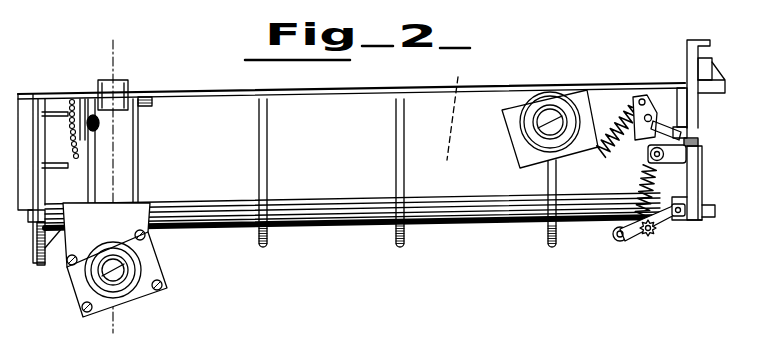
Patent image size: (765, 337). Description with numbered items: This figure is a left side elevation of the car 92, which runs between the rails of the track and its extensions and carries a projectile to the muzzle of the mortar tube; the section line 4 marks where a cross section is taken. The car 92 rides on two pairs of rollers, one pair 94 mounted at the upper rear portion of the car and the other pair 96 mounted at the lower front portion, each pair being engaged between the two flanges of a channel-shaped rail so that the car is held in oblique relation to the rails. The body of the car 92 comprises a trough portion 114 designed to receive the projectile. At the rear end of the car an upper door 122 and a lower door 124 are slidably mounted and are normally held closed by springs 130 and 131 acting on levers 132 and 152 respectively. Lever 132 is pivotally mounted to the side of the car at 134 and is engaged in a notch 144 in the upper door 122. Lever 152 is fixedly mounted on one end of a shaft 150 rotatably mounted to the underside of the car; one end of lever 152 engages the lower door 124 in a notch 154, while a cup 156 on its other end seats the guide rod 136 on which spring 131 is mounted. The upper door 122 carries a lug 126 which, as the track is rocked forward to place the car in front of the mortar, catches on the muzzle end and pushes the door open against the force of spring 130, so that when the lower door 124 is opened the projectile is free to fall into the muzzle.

The section line 4- 4 is at (88, 52).
The car 92 is at (346, 228).
The rollers 94 is at (522, 132).
The rollers 96 is at (150, 262).
The trough portion 114 is at (441, 111).
The upper door 122 is at (690, 134).
The lower door 124 is at (702, 166).
The lug 126 is at (712, 93).
The spring 130 is at (628, 111).
The spring 131 is at (641, 193).
The lever 132 is at (668, 124).
The pivot 134 is at (644, 99).
The guide rod 136 is at (648, 155).
The notch 144 is at (697, 145).
The shaft 150 is at (656, 236).
The lever 152 is at (660, 231).
The notch 154 is at (684, 187).
The cup 156 is at (618, 241).